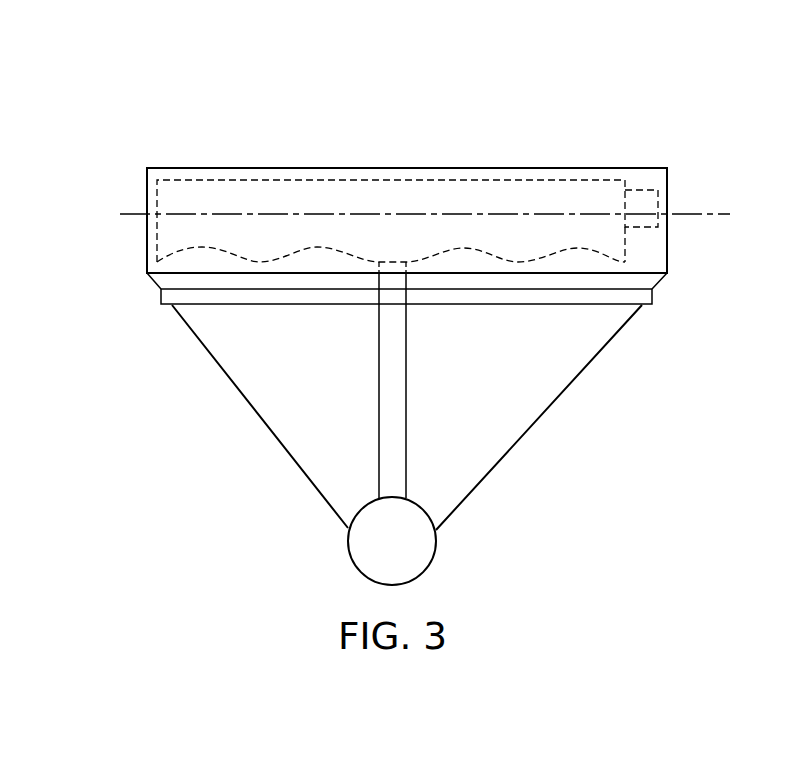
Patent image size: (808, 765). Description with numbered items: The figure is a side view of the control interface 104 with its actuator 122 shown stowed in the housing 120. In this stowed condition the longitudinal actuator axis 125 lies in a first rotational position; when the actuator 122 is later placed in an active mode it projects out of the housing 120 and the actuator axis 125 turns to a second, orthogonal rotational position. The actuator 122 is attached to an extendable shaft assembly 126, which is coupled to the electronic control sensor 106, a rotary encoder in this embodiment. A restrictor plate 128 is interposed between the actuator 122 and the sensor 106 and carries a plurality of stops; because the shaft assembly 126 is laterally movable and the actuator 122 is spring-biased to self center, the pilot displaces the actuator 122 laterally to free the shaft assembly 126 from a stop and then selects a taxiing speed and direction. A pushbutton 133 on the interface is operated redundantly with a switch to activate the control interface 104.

The control interface 104 is at (547, 110).
The actuator 122 is at (302, 181).
The pushbutton 133 is at (640, 190).
The actuator axis 125 is at (705, 214).
The restrictor plate 128 is at (312, 305).
The shaft assembly 126 is at (406, 362).
The housing 120 is at (288, 453).
The electronic control sensor 106 is at (436, 556).